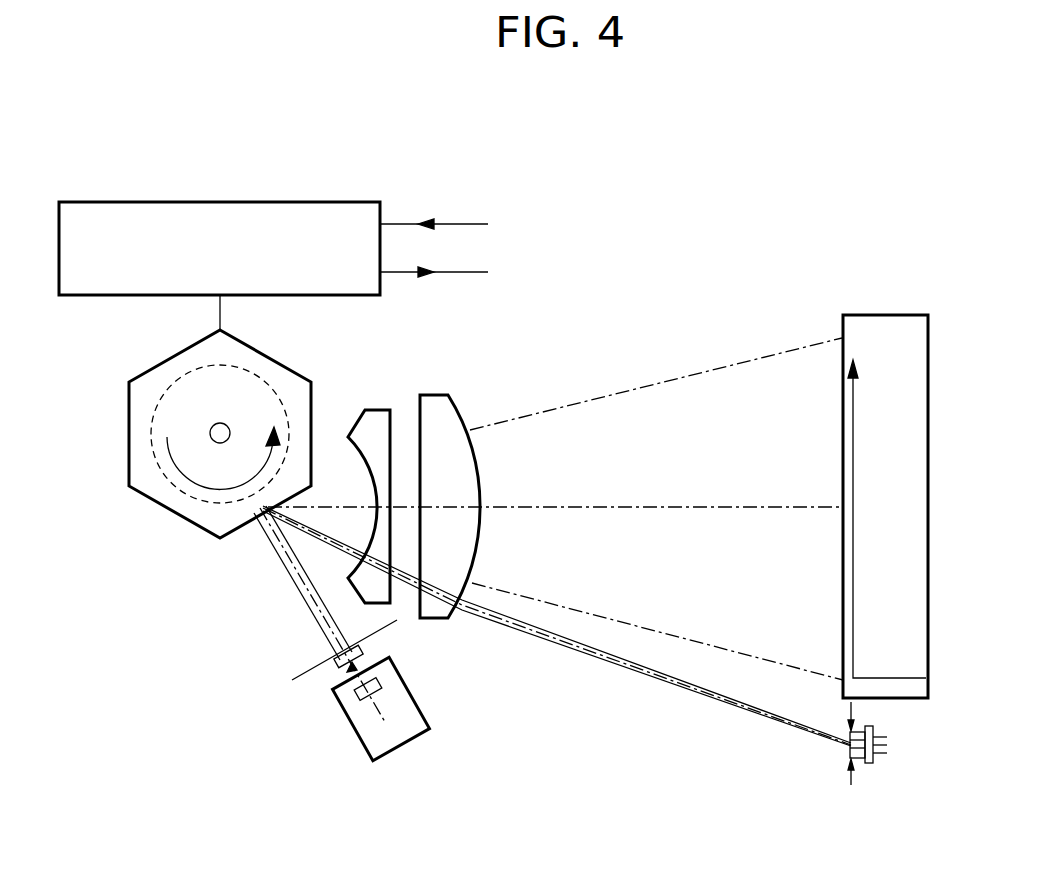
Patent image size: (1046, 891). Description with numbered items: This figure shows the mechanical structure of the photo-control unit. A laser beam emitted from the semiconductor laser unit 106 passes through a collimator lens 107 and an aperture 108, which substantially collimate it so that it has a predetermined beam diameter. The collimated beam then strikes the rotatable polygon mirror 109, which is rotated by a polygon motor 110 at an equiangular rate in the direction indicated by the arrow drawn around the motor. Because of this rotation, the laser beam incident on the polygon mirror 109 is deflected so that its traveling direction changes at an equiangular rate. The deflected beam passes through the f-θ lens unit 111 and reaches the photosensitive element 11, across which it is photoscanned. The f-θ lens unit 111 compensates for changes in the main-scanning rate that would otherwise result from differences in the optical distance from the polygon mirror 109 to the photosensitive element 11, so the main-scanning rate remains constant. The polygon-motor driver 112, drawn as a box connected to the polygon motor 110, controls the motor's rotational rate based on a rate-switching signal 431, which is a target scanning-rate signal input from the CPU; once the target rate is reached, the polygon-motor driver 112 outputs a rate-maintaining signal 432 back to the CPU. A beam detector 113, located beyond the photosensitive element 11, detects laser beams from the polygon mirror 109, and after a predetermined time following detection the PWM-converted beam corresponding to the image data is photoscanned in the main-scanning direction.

The photosensitive element 11 is at (892, 315).
The semiconductor laser unit 106 is at (383, 683).
The collimator lens 107 is at (333, 662).
The aperture 108 is at (293, 673).
The polygon mirror 109 is at (182, 517).
The polygon motor 110 is at (248, 392).
The f-θ lens unit 111 is at (493, 379).
The polygon-motor driver 112 is at (285, 202).
The beam detector 113 is at (870, 765).
The rate-switching signal 431 is at (462, 225).
The rate-maintaining signal 432 is at (462, 272).